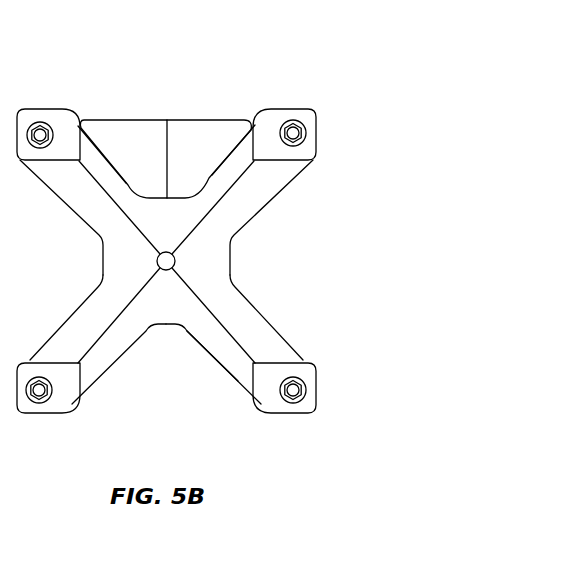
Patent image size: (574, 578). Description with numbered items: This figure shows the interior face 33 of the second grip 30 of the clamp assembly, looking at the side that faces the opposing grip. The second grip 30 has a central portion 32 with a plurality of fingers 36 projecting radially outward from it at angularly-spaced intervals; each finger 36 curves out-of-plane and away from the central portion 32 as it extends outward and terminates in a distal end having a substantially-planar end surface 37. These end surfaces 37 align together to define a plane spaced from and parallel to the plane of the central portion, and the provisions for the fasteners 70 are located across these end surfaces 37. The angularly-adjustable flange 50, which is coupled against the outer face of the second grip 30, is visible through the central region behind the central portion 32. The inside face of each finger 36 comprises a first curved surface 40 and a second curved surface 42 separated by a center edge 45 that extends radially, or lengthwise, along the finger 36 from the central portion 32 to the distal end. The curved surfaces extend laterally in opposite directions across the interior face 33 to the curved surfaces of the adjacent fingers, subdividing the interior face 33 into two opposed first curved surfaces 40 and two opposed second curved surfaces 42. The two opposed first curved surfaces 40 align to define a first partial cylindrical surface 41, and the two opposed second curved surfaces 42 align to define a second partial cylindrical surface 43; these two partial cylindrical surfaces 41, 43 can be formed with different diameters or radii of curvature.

The second grip 30 is at (381, 89).
The central portion 32 is at (74, 261).
The interior face 33 is at (306, 217).
The fingers 36 is at (238, 376).
The substantially-planar end surfaces 37 is at (72, 123).
The first curved surface 40 is at (67, 343).
The first partial cylindrical surface 41 is at (199, 283).
The second curved surface 42 is at (106, 176).
The second partial cylindrical surface 43 is at (201, 166).
The center edge 45 is at (240, 177).
The angularly-adjustable flange 50 is at (207, 120).
The fasteners 70 is at (306, 387).